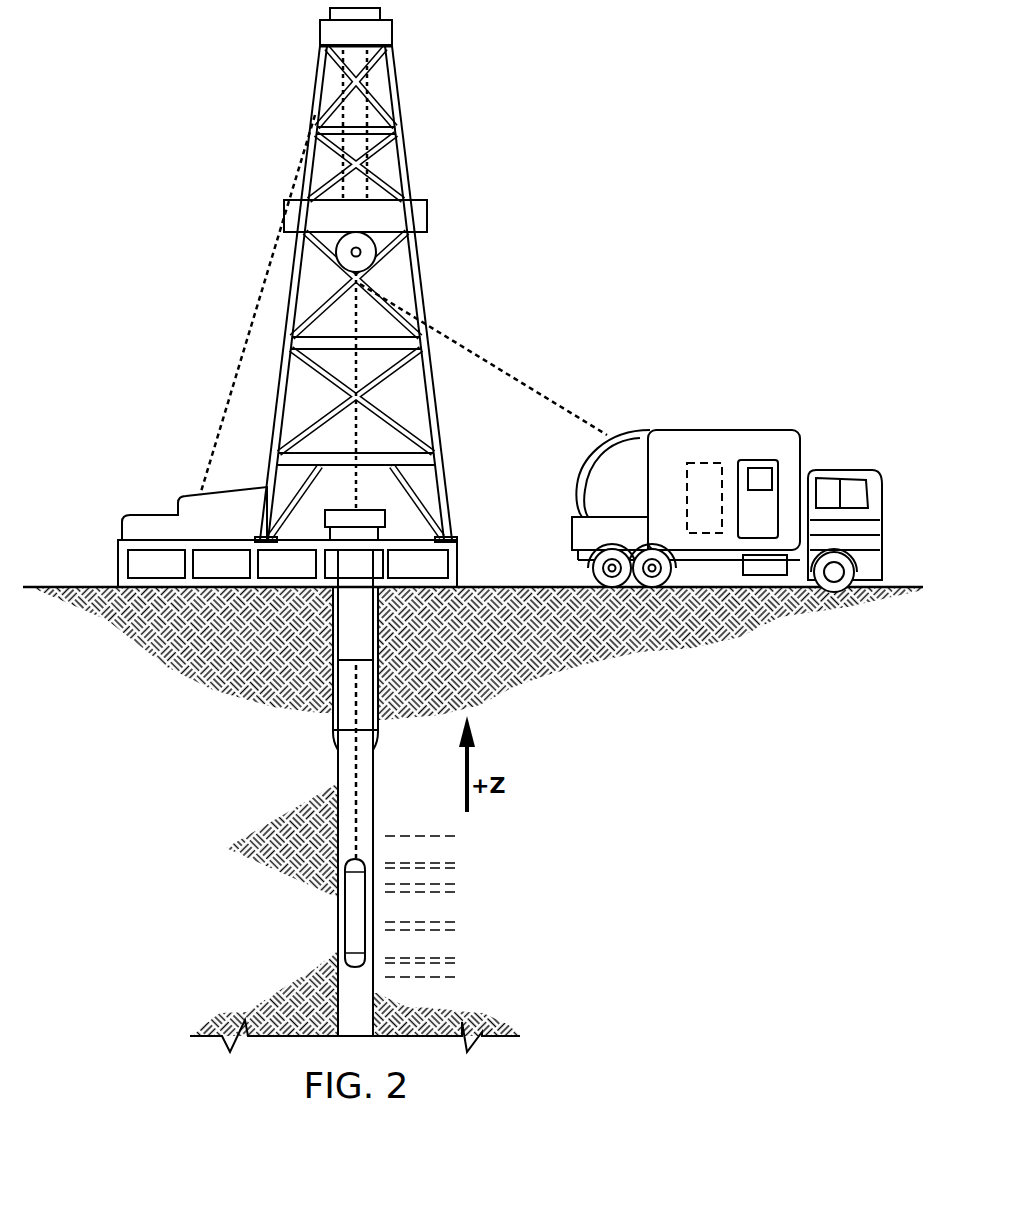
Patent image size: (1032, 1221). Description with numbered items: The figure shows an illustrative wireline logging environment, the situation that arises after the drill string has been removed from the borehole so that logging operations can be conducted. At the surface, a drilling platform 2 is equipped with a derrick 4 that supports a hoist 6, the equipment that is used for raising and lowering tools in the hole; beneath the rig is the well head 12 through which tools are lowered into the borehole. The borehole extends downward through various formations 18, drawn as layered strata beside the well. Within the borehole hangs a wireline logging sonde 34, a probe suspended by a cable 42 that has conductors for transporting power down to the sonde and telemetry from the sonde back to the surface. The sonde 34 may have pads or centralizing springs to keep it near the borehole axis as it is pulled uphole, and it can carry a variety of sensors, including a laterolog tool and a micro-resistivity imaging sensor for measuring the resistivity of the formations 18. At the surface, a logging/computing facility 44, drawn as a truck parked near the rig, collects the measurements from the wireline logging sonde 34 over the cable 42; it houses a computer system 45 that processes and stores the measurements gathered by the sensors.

The drilling platform 2 is at (458, 559).
The derrick 4 is at (454, 497).
The hoist 6 is at (348, 262).
The well head 12 is at (342, 508).
The formations 18 is at (463, 834).
The wireline logging sonde 34 is at (345, 912).
The cable 42 is at (493, 362).
The logging/computing facility 44 is at (758, 430).
The computer system 45 is at (714, 462).